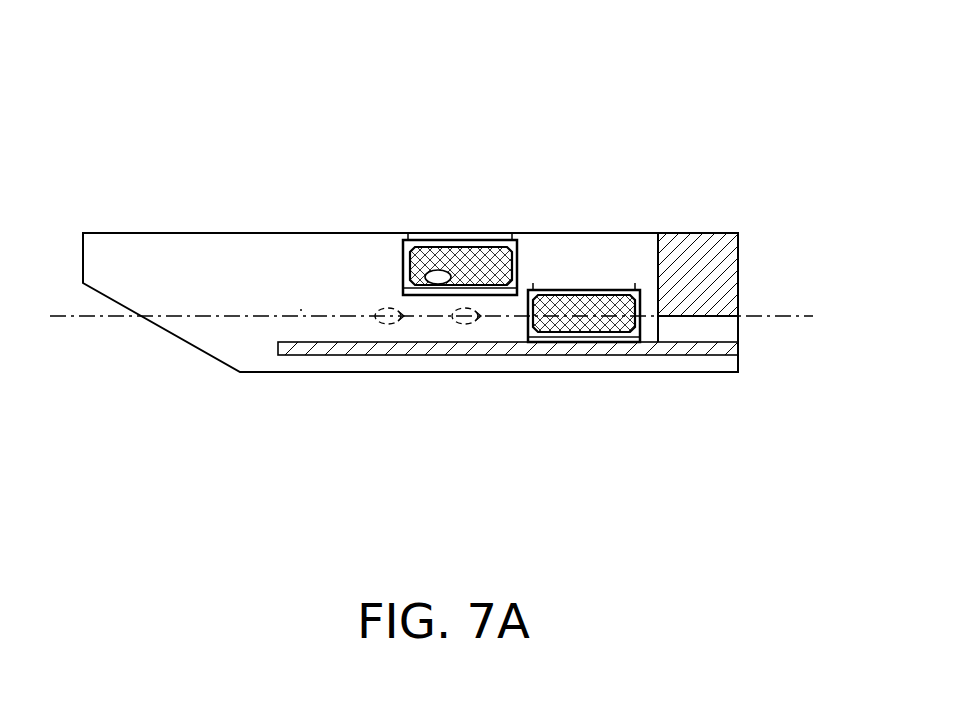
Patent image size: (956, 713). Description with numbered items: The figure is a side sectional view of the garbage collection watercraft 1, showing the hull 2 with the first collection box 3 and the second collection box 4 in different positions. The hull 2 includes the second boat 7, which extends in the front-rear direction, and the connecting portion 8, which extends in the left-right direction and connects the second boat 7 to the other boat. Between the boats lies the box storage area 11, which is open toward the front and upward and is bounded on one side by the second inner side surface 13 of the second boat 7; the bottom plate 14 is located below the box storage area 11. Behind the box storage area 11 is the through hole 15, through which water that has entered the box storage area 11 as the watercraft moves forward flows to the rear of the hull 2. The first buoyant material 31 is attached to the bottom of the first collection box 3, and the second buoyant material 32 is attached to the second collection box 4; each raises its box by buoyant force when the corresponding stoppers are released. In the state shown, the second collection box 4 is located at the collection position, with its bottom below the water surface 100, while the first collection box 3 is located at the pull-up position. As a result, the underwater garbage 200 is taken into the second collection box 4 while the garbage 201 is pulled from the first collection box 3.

The garbage collection watercraft 1 is at (252, 114).
The hull 2 is at (235, 204).
The first collection box 3 is at (467, 240).
The second collection box 4 is at (590, 290).
The second boat 7 is at (350, 233).
The connecting portion 8 is at (712, 255).
The box storage area 11 is at (366, 299).
The second inner side surface 13 is at (535, 243).
The bottom plate 14 is at (332, 347).
The through hole 15 is at (698, 340).
The first buoyant material 31 is at (492, 297).
The second buoyant material 32 is at (582, 342).
The water surface 100 is at (300, 312).
The underwater garbage 200 is at (458, 323).
The garbage 201 is at (438, 271).